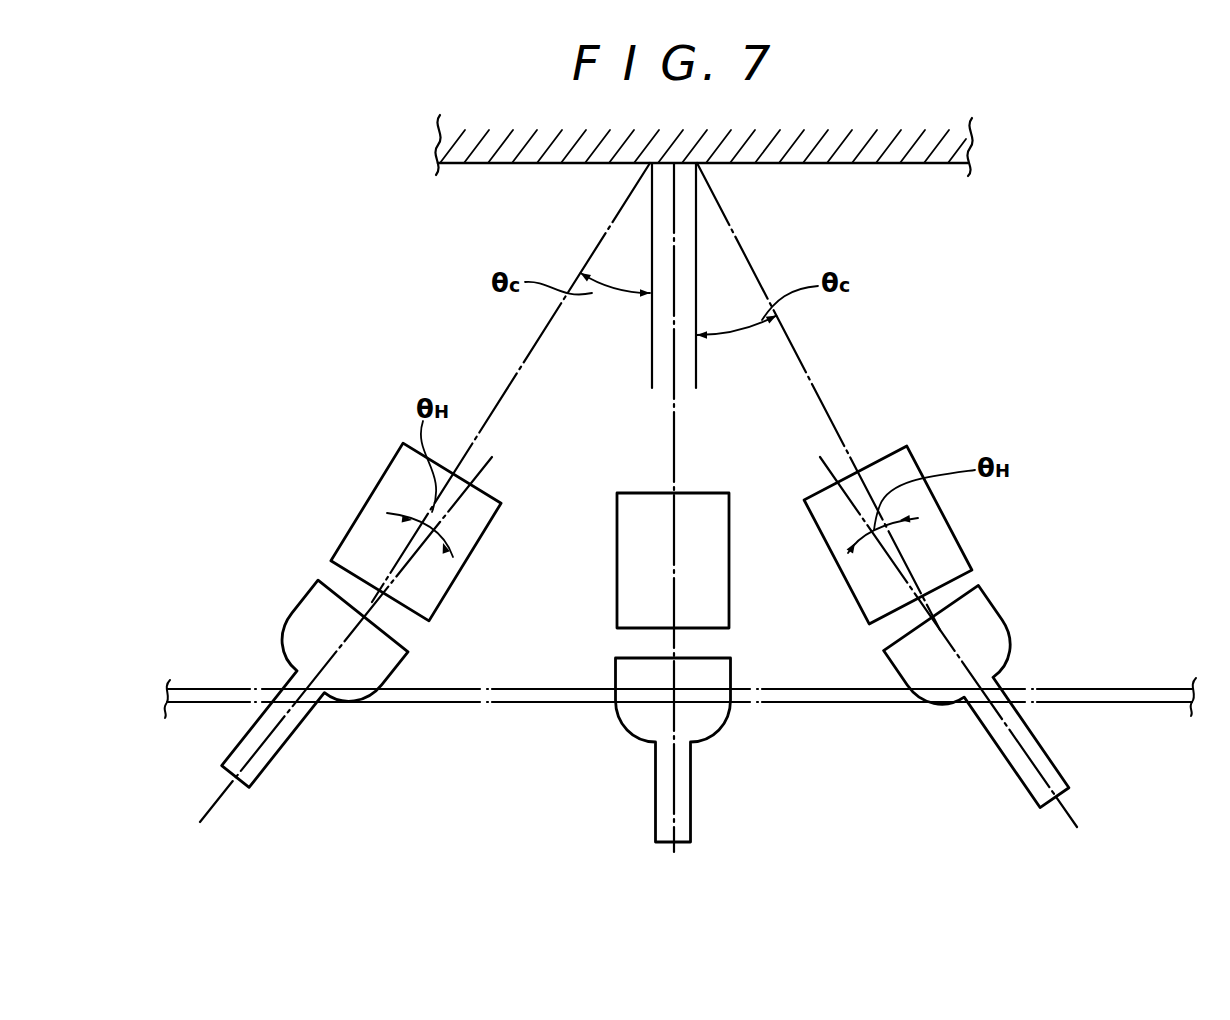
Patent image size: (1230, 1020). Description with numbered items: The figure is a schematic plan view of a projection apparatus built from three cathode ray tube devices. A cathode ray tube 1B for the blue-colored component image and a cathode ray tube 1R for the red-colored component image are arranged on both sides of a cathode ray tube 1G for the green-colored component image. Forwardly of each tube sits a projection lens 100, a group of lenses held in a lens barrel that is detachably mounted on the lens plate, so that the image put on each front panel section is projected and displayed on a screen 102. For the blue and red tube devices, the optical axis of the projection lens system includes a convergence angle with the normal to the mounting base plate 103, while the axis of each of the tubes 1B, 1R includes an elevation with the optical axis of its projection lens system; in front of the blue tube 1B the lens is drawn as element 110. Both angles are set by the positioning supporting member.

The screen 102 is at (905, 165).
The projection lens 100 is at (705, 500).
The tilted projection lens 110 is at (495, 500).
The mounting base plate 103 is at (1117, 686).
The cathode ray tube for blue-colored image 1B is at (343, 698).
The cathode ray tube for green-colored image 1G is at (680, 765).
The cathode ray tube for red-colored image 1R is at (1003, 740).